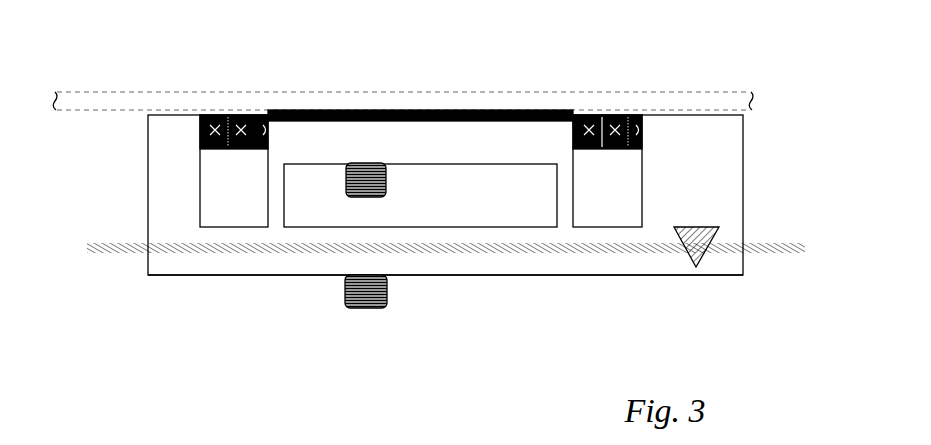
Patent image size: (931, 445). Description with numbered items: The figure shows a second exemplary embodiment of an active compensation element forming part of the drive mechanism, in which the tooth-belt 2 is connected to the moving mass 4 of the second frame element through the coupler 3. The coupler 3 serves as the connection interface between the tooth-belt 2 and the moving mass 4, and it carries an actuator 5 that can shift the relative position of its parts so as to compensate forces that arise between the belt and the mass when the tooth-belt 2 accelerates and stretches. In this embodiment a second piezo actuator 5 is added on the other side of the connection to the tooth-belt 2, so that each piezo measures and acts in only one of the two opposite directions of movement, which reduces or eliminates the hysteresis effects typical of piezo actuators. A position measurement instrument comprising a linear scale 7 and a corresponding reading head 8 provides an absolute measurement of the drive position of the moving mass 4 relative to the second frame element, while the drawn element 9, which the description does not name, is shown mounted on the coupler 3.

The tooth-belt 2 is at (420, 71).
The coupler 3 is at (481, 195).
The moving mass 4 is at (445, 327).
The actuator 5 is at (360, 124).
The linear scale 7 is at (446, 309).
The reading head 8 is at (645, 301).
The electronic components 9 is at (264, 271).